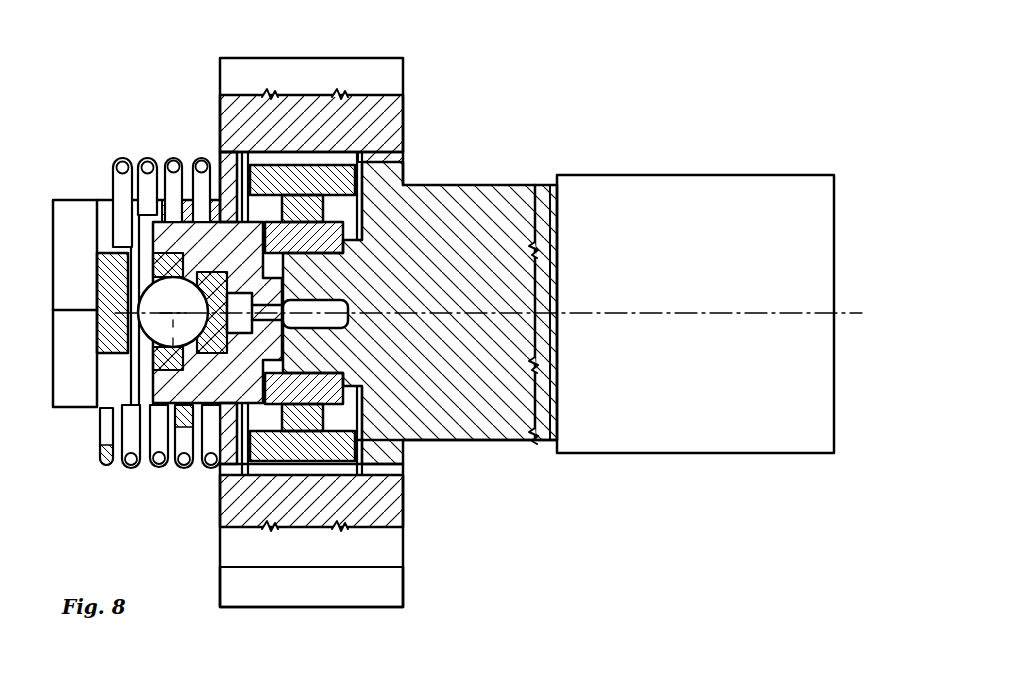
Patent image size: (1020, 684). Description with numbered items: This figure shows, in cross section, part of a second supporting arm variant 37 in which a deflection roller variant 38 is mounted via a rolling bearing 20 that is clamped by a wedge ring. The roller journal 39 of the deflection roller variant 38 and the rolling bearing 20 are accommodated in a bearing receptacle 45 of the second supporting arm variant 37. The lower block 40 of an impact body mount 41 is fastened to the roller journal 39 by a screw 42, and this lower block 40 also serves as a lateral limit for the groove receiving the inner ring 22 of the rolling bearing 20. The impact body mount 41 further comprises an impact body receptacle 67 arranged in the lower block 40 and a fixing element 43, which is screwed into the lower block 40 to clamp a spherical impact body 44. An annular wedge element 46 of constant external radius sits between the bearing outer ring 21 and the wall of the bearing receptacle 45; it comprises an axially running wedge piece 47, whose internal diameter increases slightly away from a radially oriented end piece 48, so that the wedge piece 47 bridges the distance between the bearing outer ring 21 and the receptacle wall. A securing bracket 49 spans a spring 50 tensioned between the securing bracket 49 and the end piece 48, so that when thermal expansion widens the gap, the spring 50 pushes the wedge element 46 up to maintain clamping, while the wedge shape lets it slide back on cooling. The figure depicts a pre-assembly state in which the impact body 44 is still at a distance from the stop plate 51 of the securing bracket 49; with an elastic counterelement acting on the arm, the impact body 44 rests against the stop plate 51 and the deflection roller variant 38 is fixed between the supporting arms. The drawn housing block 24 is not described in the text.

The rolling bearing 20 is at (343, 212).
The bearing outer ring 21 is at (408, 170).
The inner ring 22 is at (343, 383).
The housing 24 is at (378, 392).
The second supporting arm variant 37 is at (425, 555).
The deflection roller variant 38 is at (580, 158).
The roller journal 39 is at (470, 435).
The lower block 40 is at (178, 235).
The impact body mount 41 is at (193, 405).
The screw 42 is at (338, 303).
The fixing element 43 is at (150, 360).
The spherical impact body 44 is at (183, 300).
The bearing receptacle 45 is at (408, 185).
The annular wedge element 46 is at (222, 148).
The wedge piece 47 is at (292, 157).
The end piece 48 is at (227, 167).
The securing bracket 49 is at (73, 213).
The spring 50 is at (141, 152).
The stop plate 51 is at (97, 318).
The impact body receptacle 67 is at (198, 358).